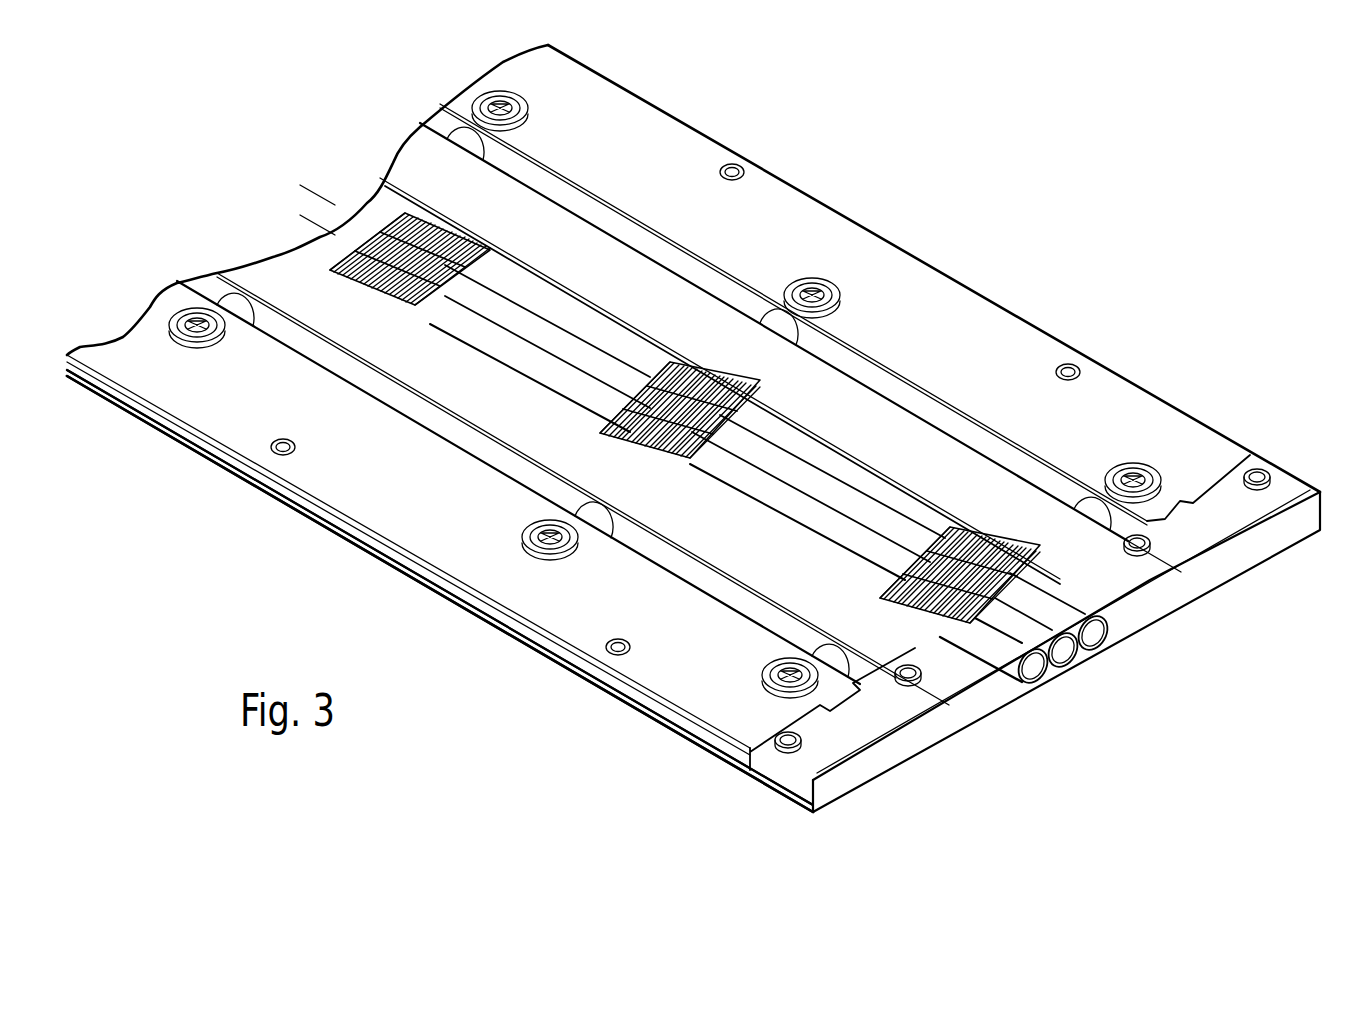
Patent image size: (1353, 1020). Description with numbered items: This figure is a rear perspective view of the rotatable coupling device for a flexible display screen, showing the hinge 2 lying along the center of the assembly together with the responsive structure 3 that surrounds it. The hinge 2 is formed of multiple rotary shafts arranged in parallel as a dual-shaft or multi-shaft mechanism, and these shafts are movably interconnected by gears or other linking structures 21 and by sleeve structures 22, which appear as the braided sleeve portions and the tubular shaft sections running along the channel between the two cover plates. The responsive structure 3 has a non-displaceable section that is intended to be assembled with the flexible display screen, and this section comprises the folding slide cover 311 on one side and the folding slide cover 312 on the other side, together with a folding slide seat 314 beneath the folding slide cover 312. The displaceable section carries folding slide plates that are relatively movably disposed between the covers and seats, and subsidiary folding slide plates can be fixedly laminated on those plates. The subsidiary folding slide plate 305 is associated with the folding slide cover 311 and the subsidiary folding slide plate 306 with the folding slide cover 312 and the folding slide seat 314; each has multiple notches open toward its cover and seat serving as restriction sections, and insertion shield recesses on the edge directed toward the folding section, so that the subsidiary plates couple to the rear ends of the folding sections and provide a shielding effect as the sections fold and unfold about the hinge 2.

The hinge 2 is at (1068, 650).
The linking structure 21 is at (958, 540).
The sleeve structure 22 is at (855, 473).
The responsive structure 3 is at (500, 656).
The subsidiary folding slide plate 305 is at (607, 273).
The subsidiary folding slide plate 306 is at (288, 335).
The folding slide cover 311 is at (1173, 410).
The folding slide cover 312 is at (660, 707).
The folding slide seat 314 is at (572, 675).